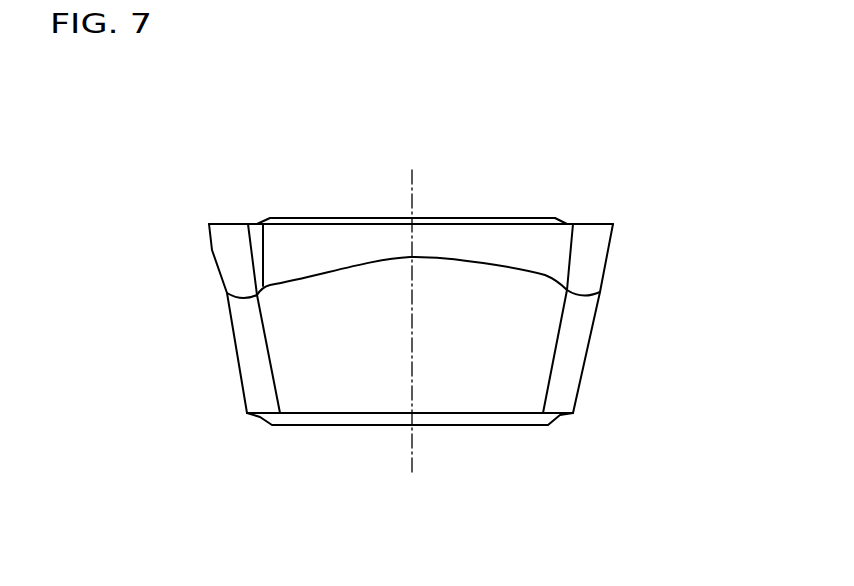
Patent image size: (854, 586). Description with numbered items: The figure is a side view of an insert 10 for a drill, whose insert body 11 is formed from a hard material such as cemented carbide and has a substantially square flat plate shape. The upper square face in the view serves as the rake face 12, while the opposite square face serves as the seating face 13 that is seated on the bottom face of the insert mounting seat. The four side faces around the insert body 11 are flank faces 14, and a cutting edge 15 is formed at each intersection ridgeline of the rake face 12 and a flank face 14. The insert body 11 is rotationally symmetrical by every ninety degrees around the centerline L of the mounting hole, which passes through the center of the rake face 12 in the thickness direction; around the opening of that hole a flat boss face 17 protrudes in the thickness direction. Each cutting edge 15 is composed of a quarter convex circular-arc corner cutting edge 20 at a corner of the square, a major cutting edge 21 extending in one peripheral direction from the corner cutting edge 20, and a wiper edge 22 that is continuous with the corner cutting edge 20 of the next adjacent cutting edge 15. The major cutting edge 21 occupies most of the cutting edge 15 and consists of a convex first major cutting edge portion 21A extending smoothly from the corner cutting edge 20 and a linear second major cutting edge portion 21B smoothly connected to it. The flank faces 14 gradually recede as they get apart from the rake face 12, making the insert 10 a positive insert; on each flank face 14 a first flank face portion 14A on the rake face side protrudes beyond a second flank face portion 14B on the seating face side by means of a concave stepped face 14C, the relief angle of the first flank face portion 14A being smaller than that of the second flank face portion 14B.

The insert for a drill 10 is at (617, 187).
The insert body 11 is at (612, 233).
The rake face 12 is at (385, 208).
The seating face 13 is at (500, 427).
The flank face 14 is at (702, 275).
The first flank face portion 14A is at (607, 272).
The second flank face portion 14B is at (528, 352).
The concave stepped face 14C is at (553, 262).
The cutting edge 15 is at (427, 43).
The boss face 17 is at (497, 217).
The corner cutting edge 20 is at (232, 224).
The major cutting edge 21 is at (407, 95).
The first major cutting edge portion 21A is at (467, 218).
The second major cutting edge portion 21B is at (308, 224).
The wiper edge 22 is at (258, 224).
The centerline L is at (412, 455).